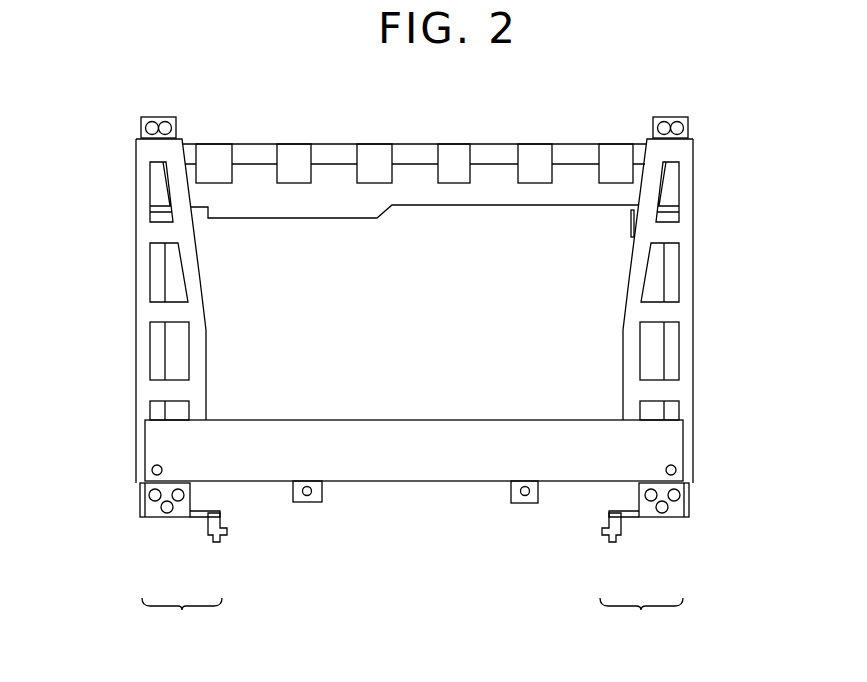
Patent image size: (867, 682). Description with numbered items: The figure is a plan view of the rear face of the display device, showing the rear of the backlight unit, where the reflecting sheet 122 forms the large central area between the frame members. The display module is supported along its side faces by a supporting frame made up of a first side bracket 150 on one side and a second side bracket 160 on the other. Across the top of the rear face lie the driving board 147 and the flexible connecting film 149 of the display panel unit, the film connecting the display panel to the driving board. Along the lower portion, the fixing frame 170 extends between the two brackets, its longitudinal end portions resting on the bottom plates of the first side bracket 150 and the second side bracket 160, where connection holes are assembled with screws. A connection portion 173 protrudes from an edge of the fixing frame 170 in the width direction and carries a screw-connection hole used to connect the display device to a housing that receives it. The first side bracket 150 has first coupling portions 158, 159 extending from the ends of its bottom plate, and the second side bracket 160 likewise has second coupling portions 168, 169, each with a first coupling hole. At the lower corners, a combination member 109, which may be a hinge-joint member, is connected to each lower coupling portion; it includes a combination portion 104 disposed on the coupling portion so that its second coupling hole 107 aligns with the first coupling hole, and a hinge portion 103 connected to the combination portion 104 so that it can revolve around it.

The hinge portion 103 is at (208, 527).
The combination portion 104 is at (163, 517).
The second coupling hole 107 is at (138, 493).
The combination member 109 is at (412, 613).
The reflecting sheet 122 is at (477, 217).
The driving board 147 is at (622, 197).
The flexible connecting film 149 is at (622, 155).
The first side bracket 150 is at (685, 357).
The first coupling portion 158 is at (690, 508).
The first coupling portion 159 is at (688, 128).
The second side bracket 160 is at (136, 246).
The second coupling portion 168 is at (140, 508).
The second coupling portion 169 is at (141, 125).
The fixing frame 170 is at (395, 465).
The connection portion 173 is at (307, 502).